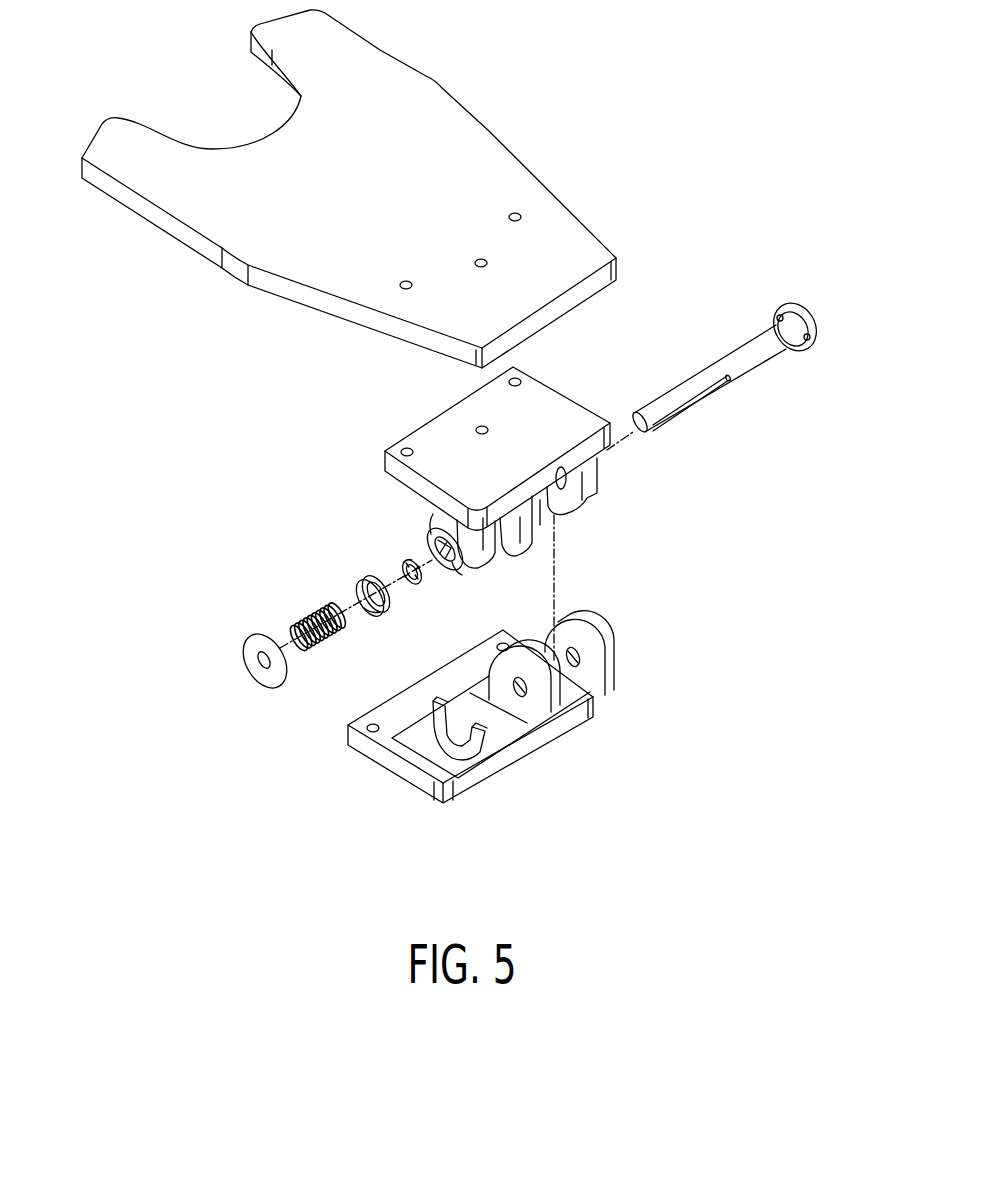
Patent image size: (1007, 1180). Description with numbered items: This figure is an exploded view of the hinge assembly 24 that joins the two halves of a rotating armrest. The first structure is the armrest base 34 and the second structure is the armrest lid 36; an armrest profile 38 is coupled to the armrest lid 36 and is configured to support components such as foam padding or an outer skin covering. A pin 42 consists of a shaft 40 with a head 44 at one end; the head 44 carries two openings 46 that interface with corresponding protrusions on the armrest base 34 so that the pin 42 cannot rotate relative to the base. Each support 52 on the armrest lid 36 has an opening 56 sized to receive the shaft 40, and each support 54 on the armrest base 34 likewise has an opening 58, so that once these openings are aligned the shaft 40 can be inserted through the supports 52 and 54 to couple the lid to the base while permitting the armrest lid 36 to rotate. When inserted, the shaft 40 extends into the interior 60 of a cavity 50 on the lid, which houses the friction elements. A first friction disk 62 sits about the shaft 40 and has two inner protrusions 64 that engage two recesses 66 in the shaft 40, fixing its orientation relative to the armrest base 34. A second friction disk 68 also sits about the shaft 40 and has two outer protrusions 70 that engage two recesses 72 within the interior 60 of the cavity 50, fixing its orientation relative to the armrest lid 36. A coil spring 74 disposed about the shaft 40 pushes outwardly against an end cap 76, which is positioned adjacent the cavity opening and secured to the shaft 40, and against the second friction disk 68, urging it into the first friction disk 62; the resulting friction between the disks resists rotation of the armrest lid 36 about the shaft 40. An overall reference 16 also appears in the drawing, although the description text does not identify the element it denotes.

The hinge assembly 16 is at (630, 124).
The hinge assembly 24 is at (311, 461).
The armrest base 34 is at (525, 743).
The armrest lid 36 is at (443, 425).
The armrest profile 38 is at (435, 80).
The shaft 40 is at (755, 358).
The pin 42 is at (698, 350).
The head 44 is at (803, 306).
The openings 46 is at (777, 318).
The cavity 50 is at (512, 530).
The support 52 is at (590, 497).
The support 54 is at (610, 668).
The opening 56 is at (560, 478).
The opening 58 is at (546, 650).
The interior 60 is at (442, 530).
The first friction disk 62 is at (410, 586).
The inner protrusions 64 is at (404, 567).
The recesses 66 is at (667, 423).
The second friction disk 68 is at (381, 613).
The outer protrusions 70 is at (366, 600).
The recesses 72 is at (440, 507).
The coil spring 74 is at (310, 620).
The end cap 76 is at (250, 648).